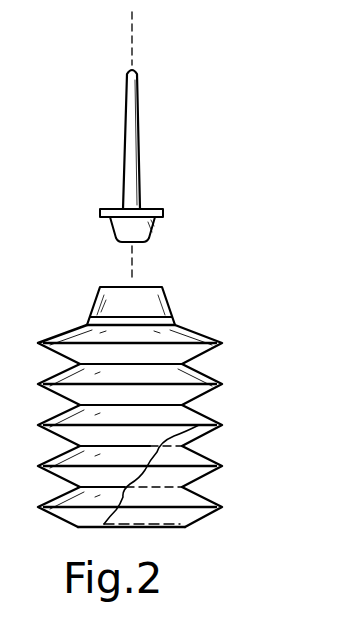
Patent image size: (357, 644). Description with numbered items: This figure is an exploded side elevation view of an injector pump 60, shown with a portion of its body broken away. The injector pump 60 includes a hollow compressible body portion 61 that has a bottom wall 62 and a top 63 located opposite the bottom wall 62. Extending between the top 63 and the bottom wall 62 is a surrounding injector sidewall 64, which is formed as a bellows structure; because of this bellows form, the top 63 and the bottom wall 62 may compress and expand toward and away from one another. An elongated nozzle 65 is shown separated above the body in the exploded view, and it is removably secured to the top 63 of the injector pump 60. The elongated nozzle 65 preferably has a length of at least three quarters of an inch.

The injector pump 60 is at (232, 228).
The hollow compressible body portion 61 is at (203, 372).
The bottom wall 62 is at (163, 529).
The top 63 is at (172, 325).
The surrounding injector sidewall 64 is at (202, 437).
The elongated nozzle 65 is at (140, 135).